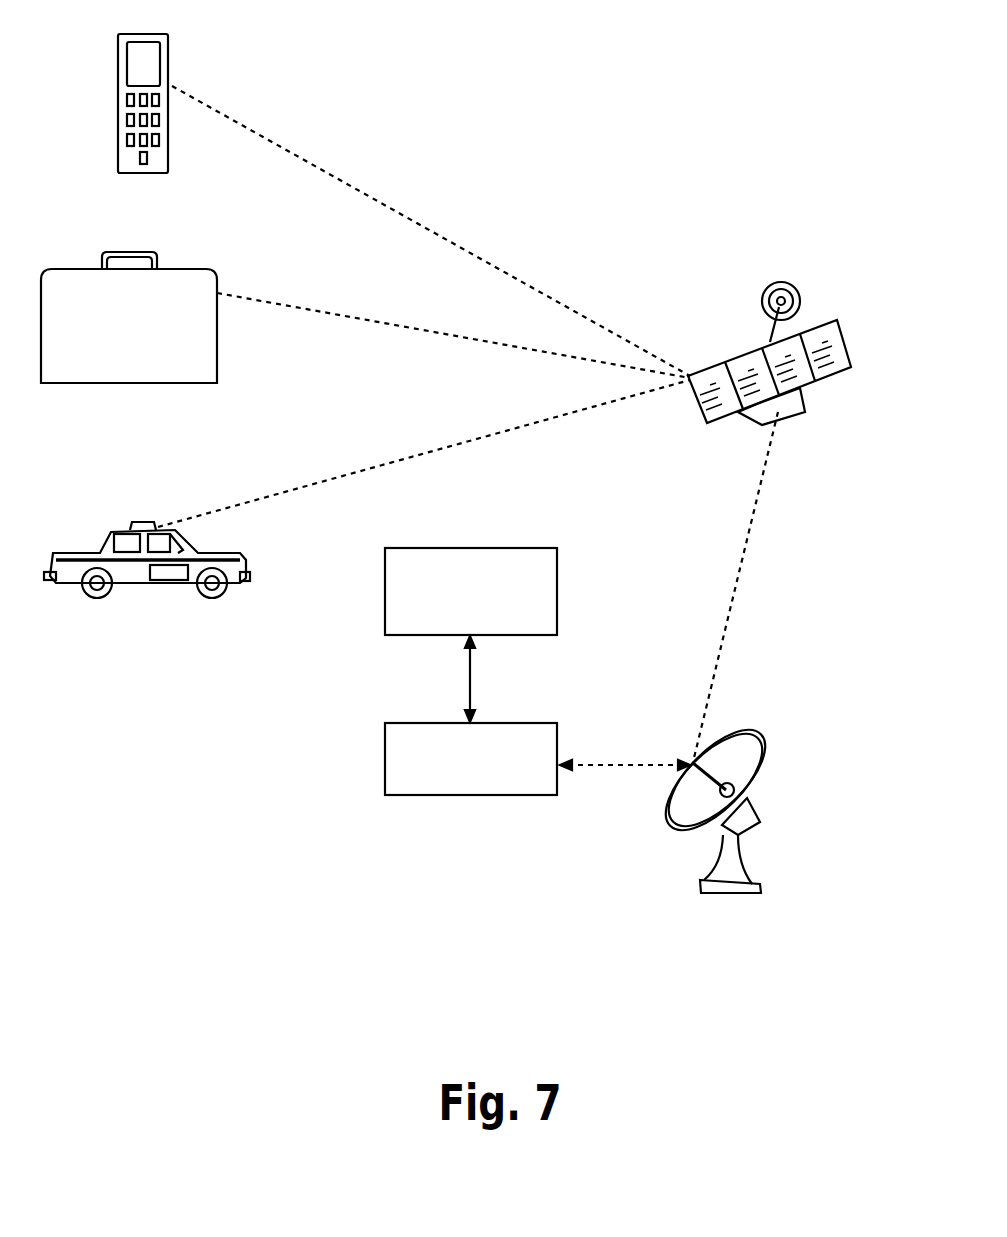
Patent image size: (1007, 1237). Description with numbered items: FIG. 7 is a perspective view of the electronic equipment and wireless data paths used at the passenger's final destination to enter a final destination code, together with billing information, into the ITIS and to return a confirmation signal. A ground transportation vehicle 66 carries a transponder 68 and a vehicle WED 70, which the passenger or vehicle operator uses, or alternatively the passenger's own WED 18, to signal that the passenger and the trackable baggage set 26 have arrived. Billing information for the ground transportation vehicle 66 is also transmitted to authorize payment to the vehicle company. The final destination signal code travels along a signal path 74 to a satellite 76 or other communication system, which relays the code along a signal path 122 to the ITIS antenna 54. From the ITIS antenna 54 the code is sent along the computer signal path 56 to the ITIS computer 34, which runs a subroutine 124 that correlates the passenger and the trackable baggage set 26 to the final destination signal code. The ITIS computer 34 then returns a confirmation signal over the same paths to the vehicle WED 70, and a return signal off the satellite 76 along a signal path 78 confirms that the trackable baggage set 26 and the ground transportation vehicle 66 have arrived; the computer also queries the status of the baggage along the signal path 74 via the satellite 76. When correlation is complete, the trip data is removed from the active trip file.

The WED 18 is at (118, 60).
The trackable baggage set 26 is at (82, 270).
The ITIS computer 34 is at (405, 722).
The ITIS antenna 54 is at (745, 813).
The computer signal path 56 is at (630, 765).
The ground transportation vehicle 66 is at (107, 548).
The transponder 68 is at (135, 525).
The vehicle WED 70 is at (195, 568).
The signal path 74 is at (447, 448).
The satellite 76 is at (837, 342).
The signal path 78 is at (433, 334).
The signal path 122 is at (724, 642).
The subroutine 124 is at (425, 547).